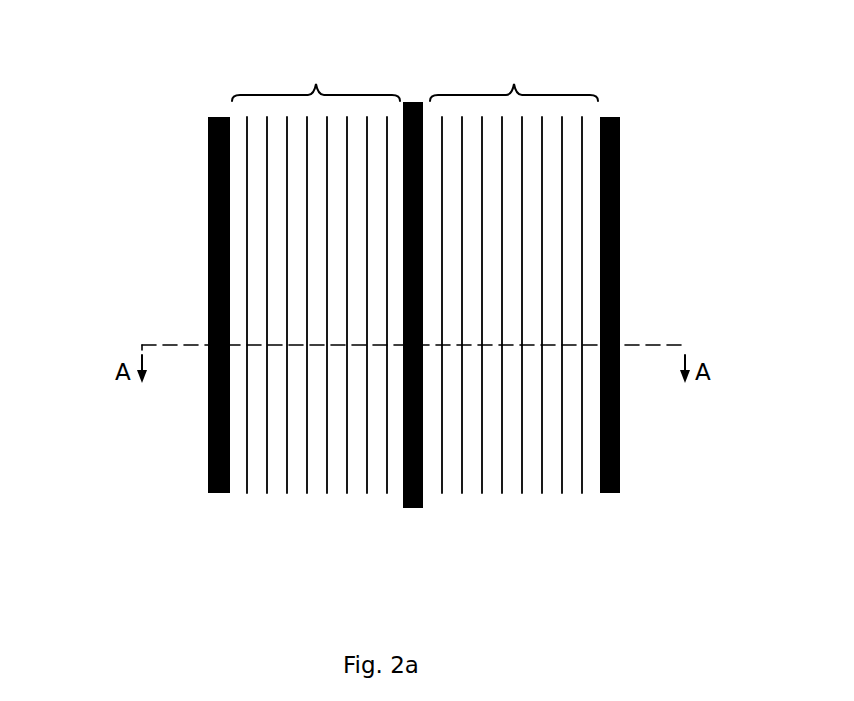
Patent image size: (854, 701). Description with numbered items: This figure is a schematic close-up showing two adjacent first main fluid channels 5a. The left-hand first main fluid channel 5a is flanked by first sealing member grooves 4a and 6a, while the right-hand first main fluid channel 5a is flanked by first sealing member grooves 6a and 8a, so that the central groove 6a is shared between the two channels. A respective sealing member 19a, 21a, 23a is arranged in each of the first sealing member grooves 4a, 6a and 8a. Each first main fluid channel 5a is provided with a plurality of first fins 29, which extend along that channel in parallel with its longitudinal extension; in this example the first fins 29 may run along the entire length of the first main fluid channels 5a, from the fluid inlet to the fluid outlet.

The first sealing member groove 4a is at (198, 168).
The sealing member 19a is at (209, 285).
The first sealing member groove 6a is at (417, 92).
The sealing member 21a is at (411, 508).
The first sealing member groove 8a is at (631, 128).
The sealing member 23a is at (620, 422).
The first main fluid channel 5a is at (415, 75).
The first fins 29 is at (265, 180).